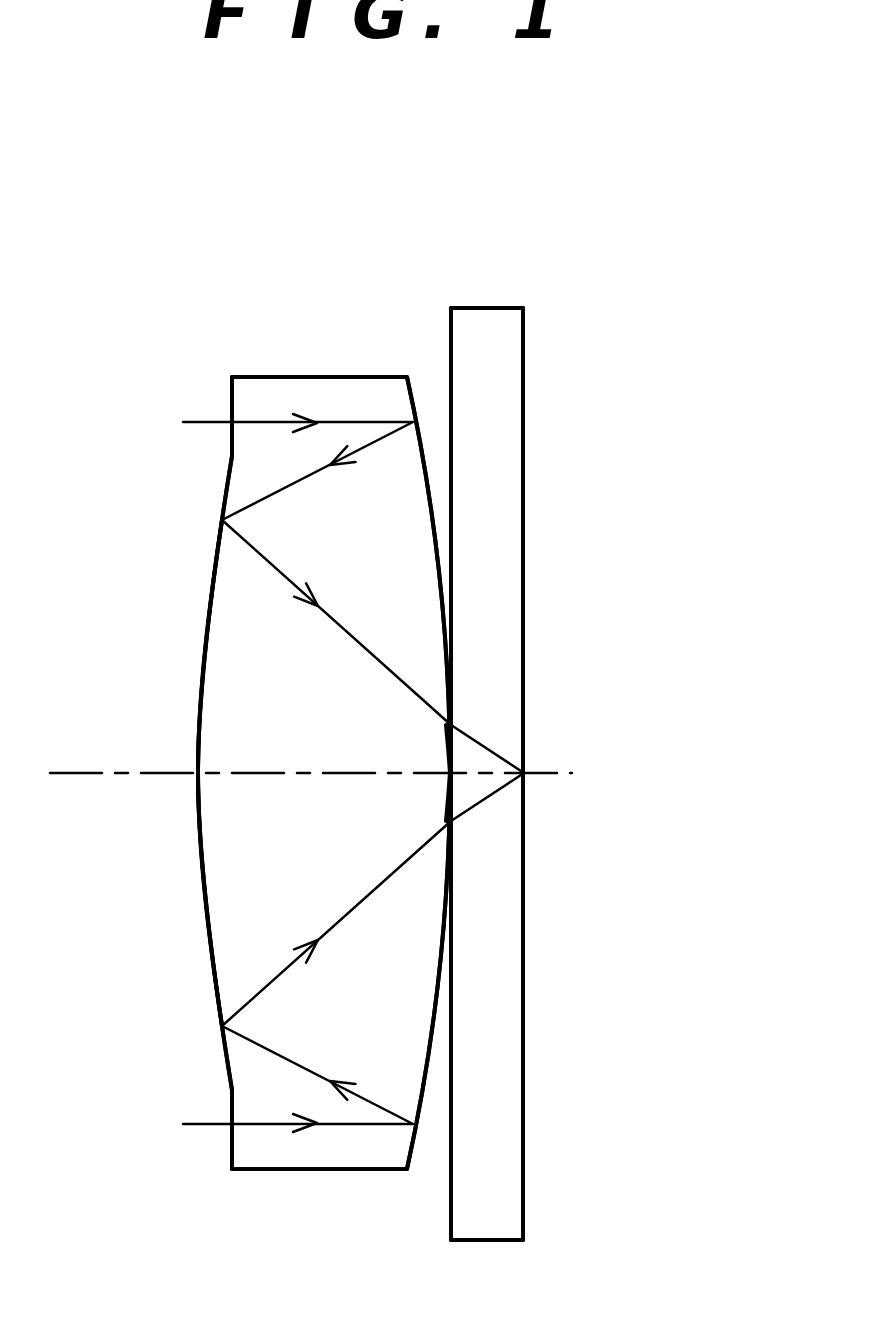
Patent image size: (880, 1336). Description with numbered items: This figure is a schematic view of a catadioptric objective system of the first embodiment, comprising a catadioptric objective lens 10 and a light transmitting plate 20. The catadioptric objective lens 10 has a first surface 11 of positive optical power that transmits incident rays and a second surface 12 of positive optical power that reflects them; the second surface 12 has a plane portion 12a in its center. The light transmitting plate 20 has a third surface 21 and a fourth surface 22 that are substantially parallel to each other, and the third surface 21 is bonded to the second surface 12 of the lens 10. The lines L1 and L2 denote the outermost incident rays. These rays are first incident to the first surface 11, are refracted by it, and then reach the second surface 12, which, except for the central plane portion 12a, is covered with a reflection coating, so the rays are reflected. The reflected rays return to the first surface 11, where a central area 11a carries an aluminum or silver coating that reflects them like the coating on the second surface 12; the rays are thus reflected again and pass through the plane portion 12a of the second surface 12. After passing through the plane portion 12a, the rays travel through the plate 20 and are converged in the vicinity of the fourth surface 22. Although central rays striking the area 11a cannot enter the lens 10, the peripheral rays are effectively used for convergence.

The catadioptric objective lens 10 is at (240, 328).
The first surface 11 is at (222, 480).
The area 11a is at (202, 1027).
The second surface 12 is at (432, 498).
The plane portion 12a is at (547, 665).
The light transmitting plate 20 is at (573, 342).
The third surface 21 is at (452, 1192).
The fourth surface 22 is at (523, 1120).
The outermost incident ray L1 is at (334, 556).
The outermost incident ray L2 is at (322, 968).